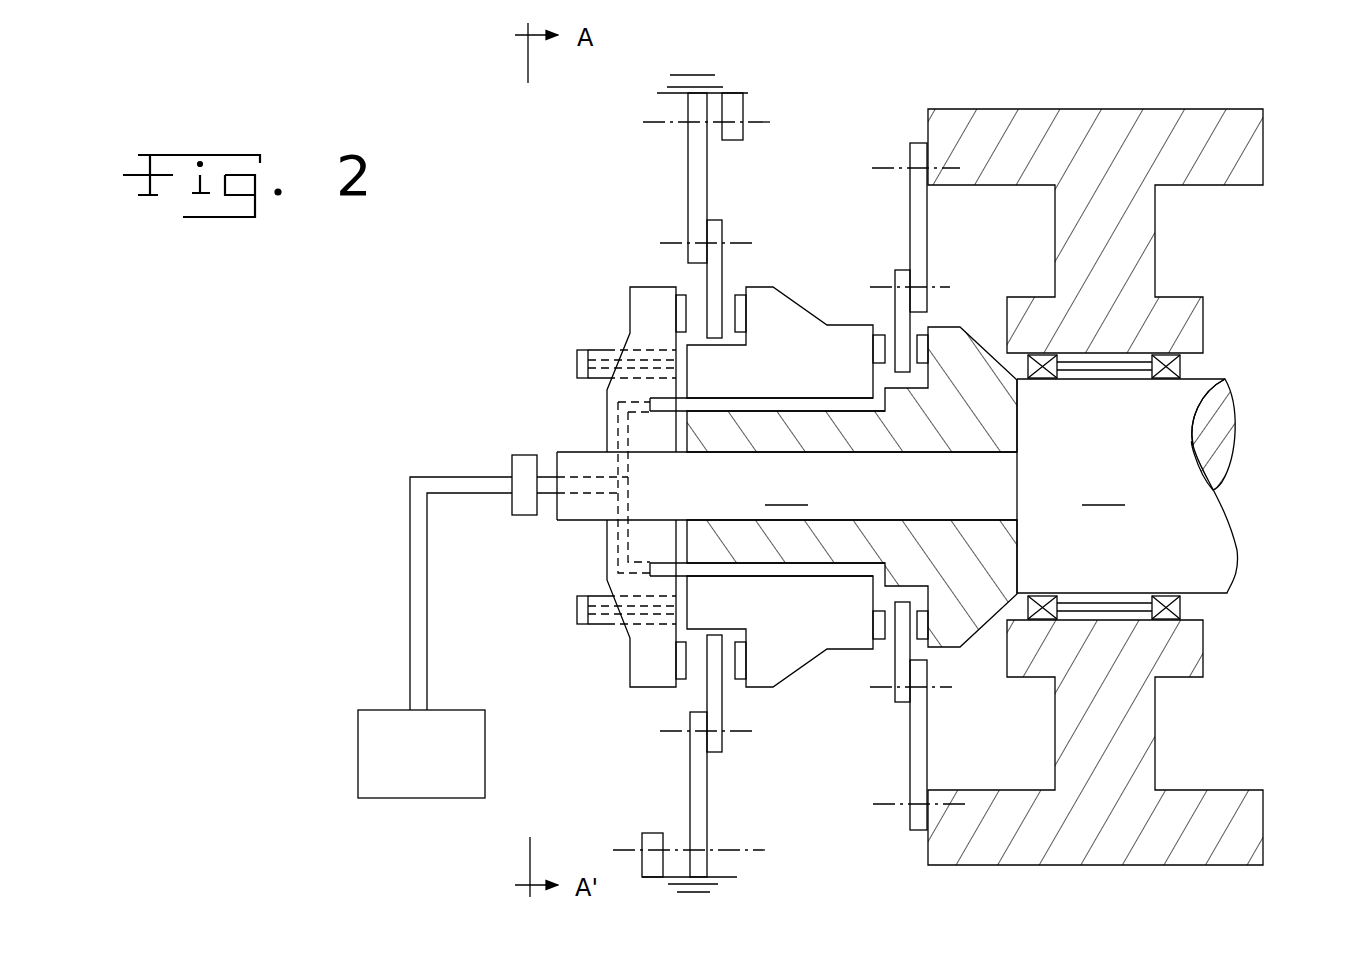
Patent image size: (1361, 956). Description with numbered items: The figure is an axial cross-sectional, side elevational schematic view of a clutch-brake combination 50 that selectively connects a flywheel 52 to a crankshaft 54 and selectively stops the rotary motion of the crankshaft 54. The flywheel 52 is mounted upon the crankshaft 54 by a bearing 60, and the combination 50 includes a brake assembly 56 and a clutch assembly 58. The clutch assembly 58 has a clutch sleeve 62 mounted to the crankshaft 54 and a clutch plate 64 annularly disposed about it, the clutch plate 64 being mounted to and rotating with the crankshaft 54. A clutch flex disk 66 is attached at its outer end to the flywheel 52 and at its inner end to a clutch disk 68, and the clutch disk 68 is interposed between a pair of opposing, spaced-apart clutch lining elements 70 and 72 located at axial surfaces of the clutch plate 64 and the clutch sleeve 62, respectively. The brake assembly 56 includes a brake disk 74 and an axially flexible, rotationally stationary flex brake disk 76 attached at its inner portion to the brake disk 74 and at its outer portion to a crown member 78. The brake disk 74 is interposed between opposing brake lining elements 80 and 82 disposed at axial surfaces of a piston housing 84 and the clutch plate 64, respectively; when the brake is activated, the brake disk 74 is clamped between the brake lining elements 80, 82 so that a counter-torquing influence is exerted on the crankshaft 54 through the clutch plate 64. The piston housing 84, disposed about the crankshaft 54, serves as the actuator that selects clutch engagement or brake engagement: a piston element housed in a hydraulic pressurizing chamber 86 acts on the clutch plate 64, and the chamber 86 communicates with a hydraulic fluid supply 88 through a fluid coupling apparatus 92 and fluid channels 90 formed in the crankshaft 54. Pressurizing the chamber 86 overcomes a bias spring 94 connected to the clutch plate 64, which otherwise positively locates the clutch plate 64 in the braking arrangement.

The clutch-brake combination 50 is at (482, 105).
The flywheel 52 is at (1255, 143).
The crankshaft 54 is at (897, 486).
The brake assembly 56 is at (572, 232).
The clutch assembly 58 is at (828, 122).
The bearing 60 is at (1196, 369).
The clutch sleeve 62 is at (967, 355).
The clutch plate 64 is at (790, 313).
The clutch flex disk 66 is at (913, 153).
The clutch disk 68 is at (902, 275).
The clutch lining element 70 is at (881, 337).
The clutch lining element 72 is at (921, 335).
The brake disk 74 is at (717, 222).
The flex brake disk 76 is at (690, 115).
The crown member 78 is at (700, 64).
The brake lining element 80 is at (685, 302).
The brake lining element 82 is at (739, 300).
The piston housing 84 is at (640, 320).
The hydraulic pressurizing chamber 86 is at (663, 400).
The hydraulic fluid supply 88 is at (360, 738).
The fluid channels 90 is at (622, 443).
The fluid coupling apparatus 92 is at (418, 497).
The bias spring 94 is at (592, 355).